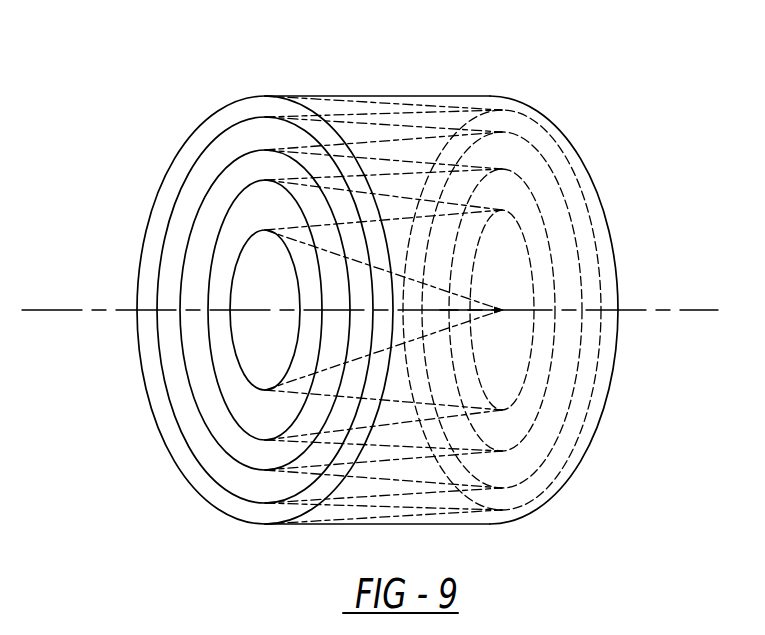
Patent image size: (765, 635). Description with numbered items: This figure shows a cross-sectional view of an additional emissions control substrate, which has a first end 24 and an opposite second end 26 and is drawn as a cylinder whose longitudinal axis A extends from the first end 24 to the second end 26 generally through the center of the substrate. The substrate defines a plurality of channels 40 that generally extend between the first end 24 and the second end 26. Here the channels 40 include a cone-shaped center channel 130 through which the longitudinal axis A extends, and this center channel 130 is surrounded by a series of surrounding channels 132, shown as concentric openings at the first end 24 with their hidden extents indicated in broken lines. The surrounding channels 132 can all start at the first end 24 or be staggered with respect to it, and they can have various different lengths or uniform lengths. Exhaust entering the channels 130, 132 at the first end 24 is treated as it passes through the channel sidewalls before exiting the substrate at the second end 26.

The channels 40 is at (372, 73).
The first end 24 is at (152, 207).
The second end 26 is at (607, 217).
The cone-shaped center channel 130 is at (245, 335).
The surrounding channels 132 is at (242, 406).
The longitudinal axis A is at (52, 308).